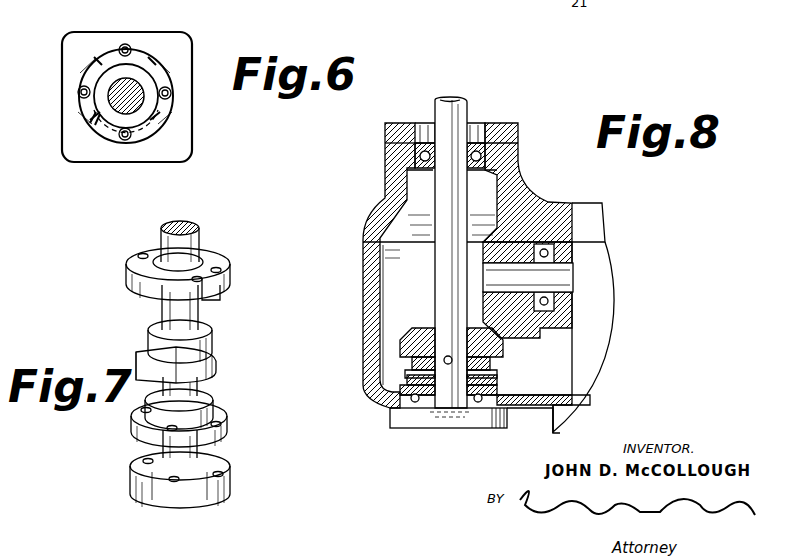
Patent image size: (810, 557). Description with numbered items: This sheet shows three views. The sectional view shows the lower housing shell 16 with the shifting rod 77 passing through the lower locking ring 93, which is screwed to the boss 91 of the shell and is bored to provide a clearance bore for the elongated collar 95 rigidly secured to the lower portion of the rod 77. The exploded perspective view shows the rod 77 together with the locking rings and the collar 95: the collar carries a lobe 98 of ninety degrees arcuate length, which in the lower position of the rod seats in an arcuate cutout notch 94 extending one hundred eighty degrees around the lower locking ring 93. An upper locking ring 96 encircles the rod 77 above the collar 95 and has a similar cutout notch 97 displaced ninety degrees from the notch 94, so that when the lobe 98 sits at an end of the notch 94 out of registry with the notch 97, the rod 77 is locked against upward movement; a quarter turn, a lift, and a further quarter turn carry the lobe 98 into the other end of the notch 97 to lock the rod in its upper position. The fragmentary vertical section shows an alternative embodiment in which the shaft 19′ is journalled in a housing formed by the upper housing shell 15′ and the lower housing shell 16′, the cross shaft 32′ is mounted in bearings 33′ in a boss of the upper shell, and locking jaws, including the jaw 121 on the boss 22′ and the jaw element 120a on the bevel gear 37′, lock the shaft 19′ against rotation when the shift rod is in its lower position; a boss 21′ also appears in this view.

In FIG. 6, the lower housing shell 16 is at (120, 153).
In FIG. 6, the lower locking ring 93 is at (138, 50).
In FIG. 7, the lower locking ring 93 is at (232, 436).
In FIG. 6, the collar 95 is at (150, 105).
In FIG. 7, the collar 95 is at (160, 322).
In FIG. 6, the shifting rod 77 is at (107, 97).
In FIG. 7, the shifting rod 77 is at (190, 315).
In FIG. 6, the cutout notch 94 is at (95, 127).
In FIG. 7, the cutout notch 94 is at (226, 406).
In FIG. 6, the lobe 98 is at (132, 136).
In FIG. 7, the lobe 98 is at (214, 368).
In FIG. 7, the upper locking ring 96 is at (138, 262).
In FIG. 7, the cutout notch 97 is at (200, 274).
In FIG. 7, the boss 91 is at (232, 497).
In FIG. 8, the lower housing shell 16′ is at (365, 328).
In FIG. 8, the upper housing shell 15′ is at (552, 212).
In FIG. 8, the bearings 33′ is at (550, 248).
In FIG. 8, the cross shaft 32′ is at (560, 285).
In FIG. 8, the shaft 19′ is at (436, 300).
In FIG. 8, the bevel gear 37′ is at (402, 345).
In FIG. 8, the spacer 120a is at (492, 364).
In FIG. 8, the locking jaw 121 is at (499, 377).
In FIG. 8, the boss 22′ is at (402, 412).
In FIG. 8, the bottom flange 21′ is at (490, 425).